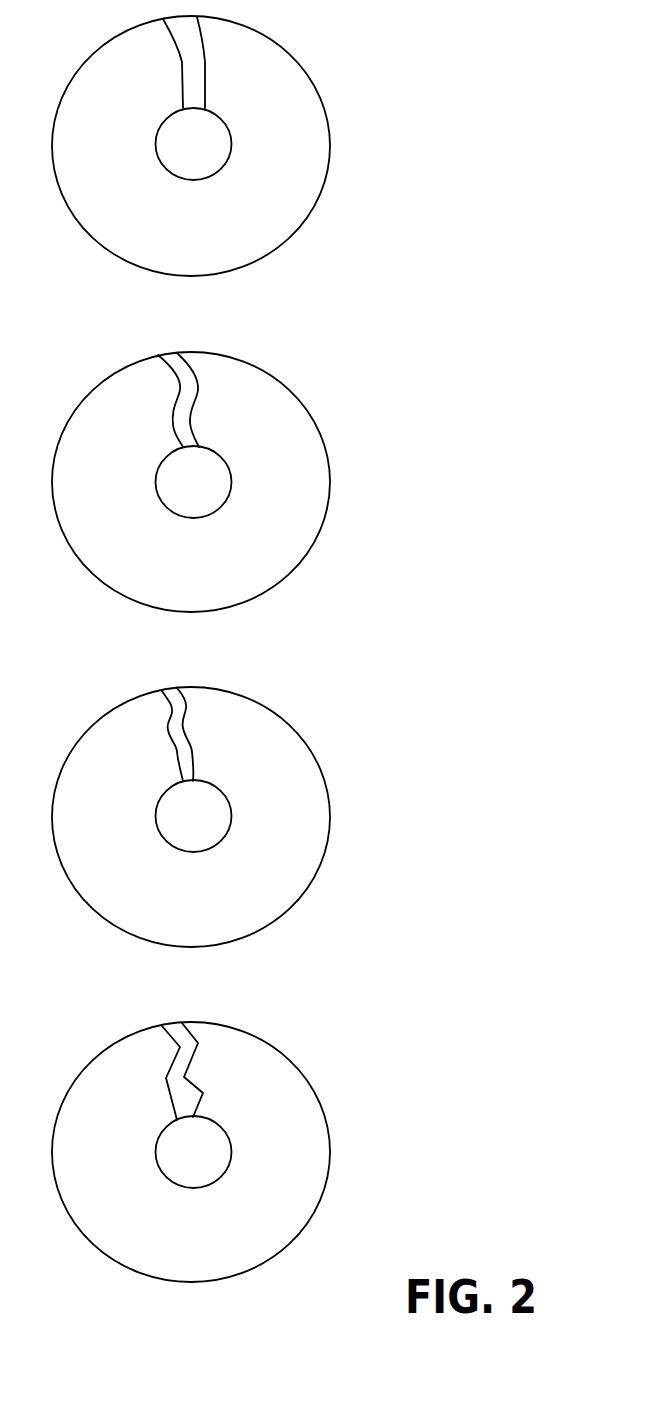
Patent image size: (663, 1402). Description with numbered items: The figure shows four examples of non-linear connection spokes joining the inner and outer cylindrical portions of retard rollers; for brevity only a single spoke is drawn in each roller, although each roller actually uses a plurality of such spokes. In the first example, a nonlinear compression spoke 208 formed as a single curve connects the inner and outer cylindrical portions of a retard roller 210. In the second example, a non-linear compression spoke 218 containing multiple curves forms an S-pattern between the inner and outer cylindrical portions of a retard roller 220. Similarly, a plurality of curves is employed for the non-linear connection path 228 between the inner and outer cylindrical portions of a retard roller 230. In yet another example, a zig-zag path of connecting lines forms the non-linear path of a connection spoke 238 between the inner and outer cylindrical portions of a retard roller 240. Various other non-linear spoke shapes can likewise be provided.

The retard roller 210 is at (217, 146).
The nonlinear compression spoke 208 is at (205, 88).
The retard roller 220 is at (217, 482).
The non-linear compression spoke 218 is at (192, 413).
The retard roller 230 is at (217, 817).
The non-linear connection path 228 is at (190, 755).
The retard roller 240 is at (207, 1148).
The connection spoke 238 is at (192, 1063).